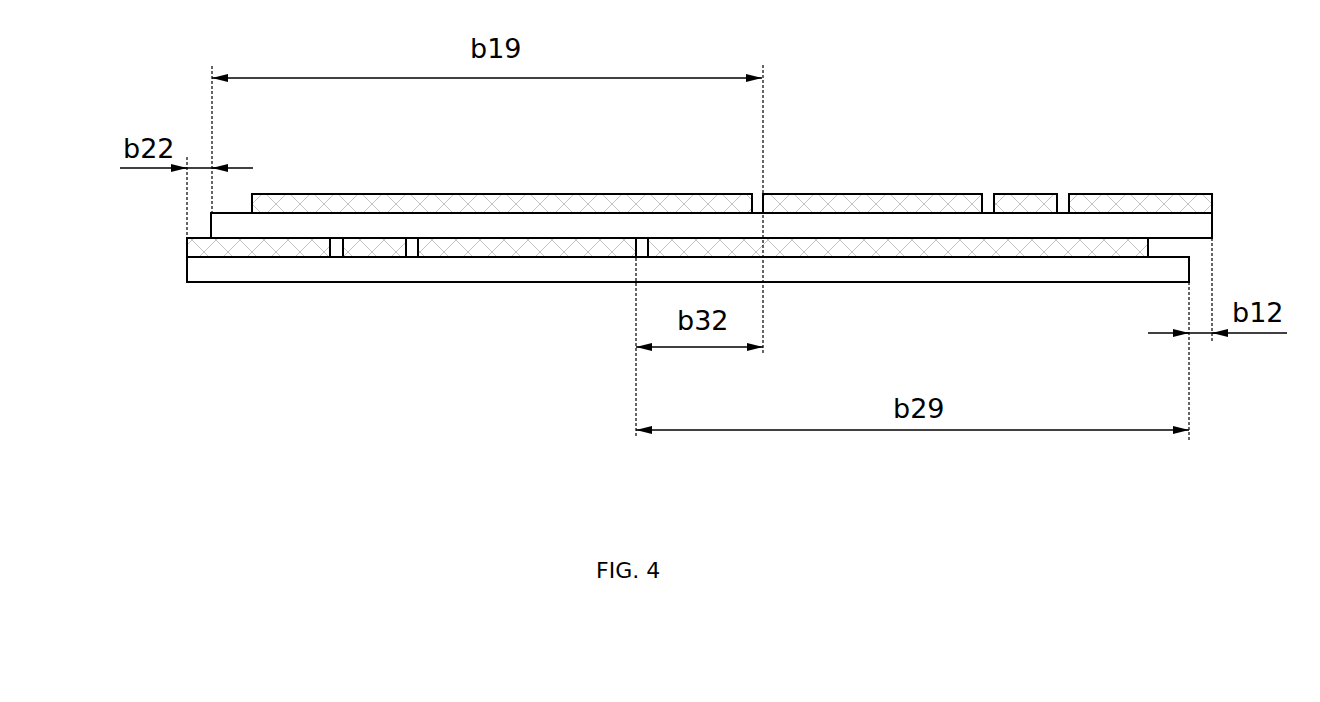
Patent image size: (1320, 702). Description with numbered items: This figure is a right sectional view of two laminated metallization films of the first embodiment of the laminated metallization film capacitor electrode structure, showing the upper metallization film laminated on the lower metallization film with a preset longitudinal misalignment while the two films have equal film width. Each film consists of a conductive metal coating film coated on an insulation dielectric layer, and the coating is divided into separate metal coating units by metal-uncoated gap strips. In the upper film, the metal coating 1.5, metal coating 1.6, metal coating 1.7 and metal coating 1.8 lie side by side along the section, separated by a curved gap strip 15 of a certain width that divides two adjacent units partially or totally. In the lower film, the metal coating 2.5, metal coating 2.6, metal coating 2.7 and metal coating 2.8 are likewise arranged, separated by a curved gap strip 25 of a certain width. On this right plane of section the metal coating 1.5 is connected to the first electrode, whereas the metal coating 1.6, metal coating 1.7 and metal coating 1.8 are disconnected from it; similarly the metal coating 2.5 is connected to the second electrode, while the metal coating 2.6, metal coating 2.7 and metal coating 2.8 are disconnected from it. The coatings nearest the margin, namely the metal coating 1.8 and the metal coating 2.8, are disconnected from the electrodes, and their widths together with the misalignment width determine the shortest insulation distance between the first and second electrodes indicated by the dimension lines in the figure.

The metal coating 1.5 is at (1140, 207).
The metal coating 1.6 is at (1030, 207).
The metal coating 1.7 is at (897, 207).
The metal coating 1.8 is at (385, 205).
The curved gap strip 15 is at (756, 203).
The metal coating 2.5 is at (260, 252).
The metal coating 2.6 is at (370, 252).
The metal coating 2.7 is at (557, 252).
The metal coating 2.8 is at (907, 252).
The curved gap strip 25 is at (410, 245).